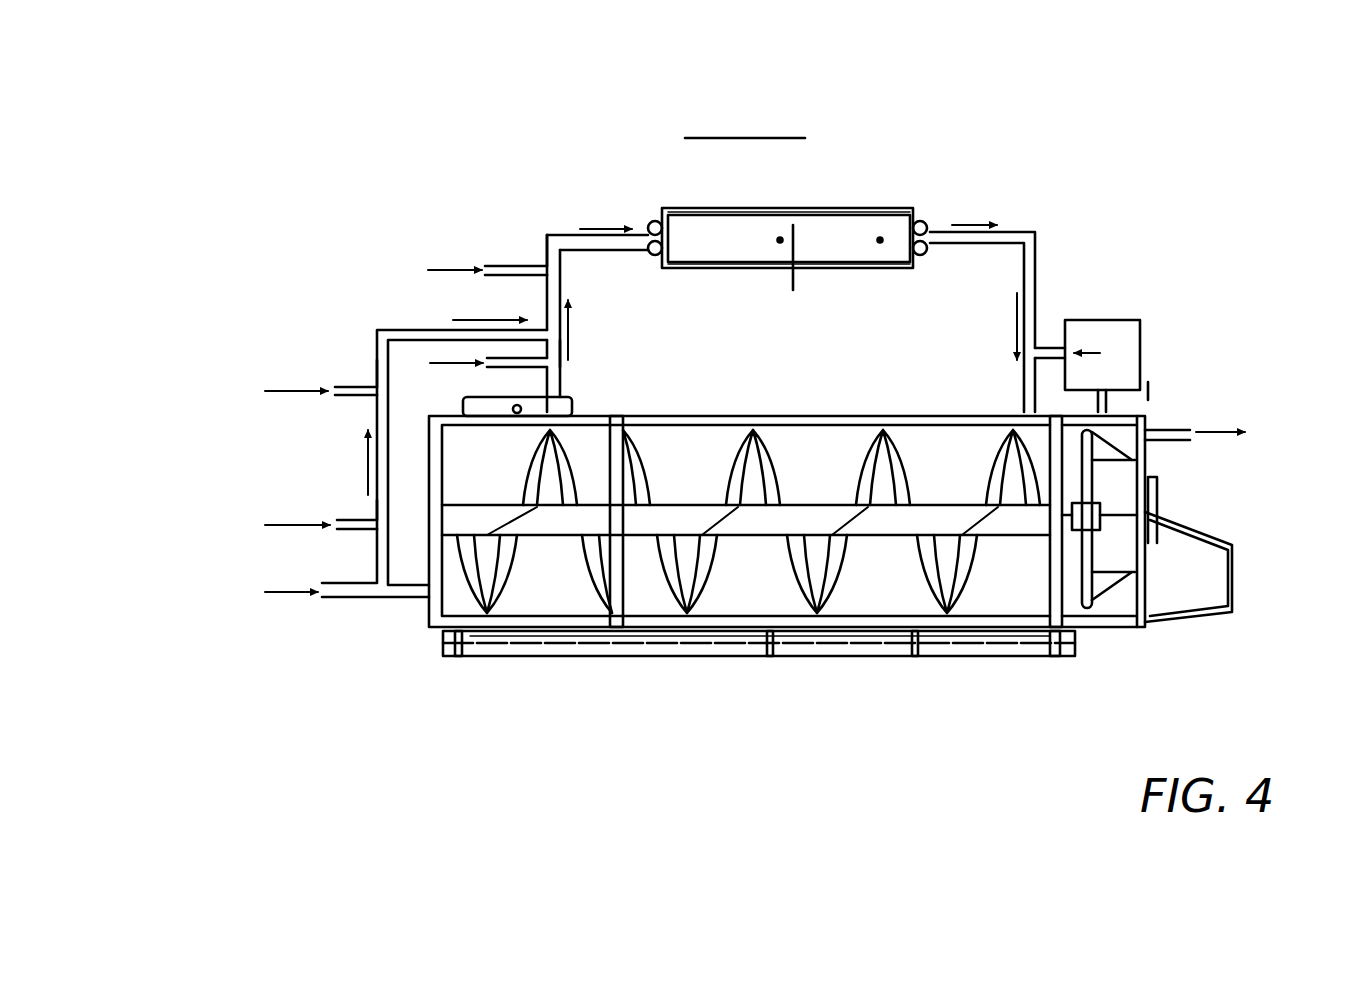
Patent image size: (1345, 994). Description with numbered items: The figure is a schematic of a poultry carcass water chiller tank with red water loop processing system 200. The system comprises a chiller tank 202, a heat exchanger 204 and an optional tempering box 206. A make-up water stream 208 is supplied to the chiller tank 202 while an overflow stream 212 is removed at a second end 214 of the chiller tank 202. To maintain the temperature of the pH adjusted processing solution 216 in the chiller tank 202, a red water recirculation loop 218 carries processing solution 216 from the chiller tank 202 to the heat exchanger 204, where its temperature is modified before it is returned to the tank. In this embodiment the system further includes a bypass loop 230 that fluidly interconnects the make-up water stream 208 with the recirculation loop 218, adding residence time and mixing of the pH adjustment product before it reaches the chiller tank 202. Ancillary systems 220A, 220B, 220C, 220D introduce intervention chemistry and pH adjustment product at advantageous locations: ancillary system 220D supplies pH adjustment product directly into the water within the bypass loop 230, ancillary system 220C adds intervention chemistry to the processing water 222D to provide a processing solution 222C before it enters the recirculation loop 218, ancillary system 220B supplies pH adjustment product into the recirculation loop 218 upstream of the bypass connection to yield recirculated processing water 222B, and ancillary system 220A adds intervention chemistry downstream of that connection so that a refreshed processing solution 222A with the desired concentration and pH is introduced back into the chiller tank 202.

The chiller tank with red water loop processing system 200 is at (1128, 103).
The chiller tank 202 is at (862, 645).
The heat exchanger 204 is at (846, 208).
The tempering box 206 is at (1142, 343).
The make-up water stream 208 is at (398, 600).
The overflow stream 212 is at (1168, 420).
The second end 214 is at (1142, 464).
The pH adjusted processing solution 216 is at (750, 585).
The red water recirculation loop 218 is at (578, 232).
The ancillary system 220A is at (449, 267).
The ancillary system 220B is at (471, 375).
The ancillary system 220C is at (283, 392).
The ancillary system 220D is at (284, 527).
The refreshed processing solution 222A is at (545, 237).
The recirculated processing water 222B is at (562, 352).
The processing solution 222C is at (380, 368).
The processing water 222D is at (378, 508).
The bypass loop 230 is at (365, 420).